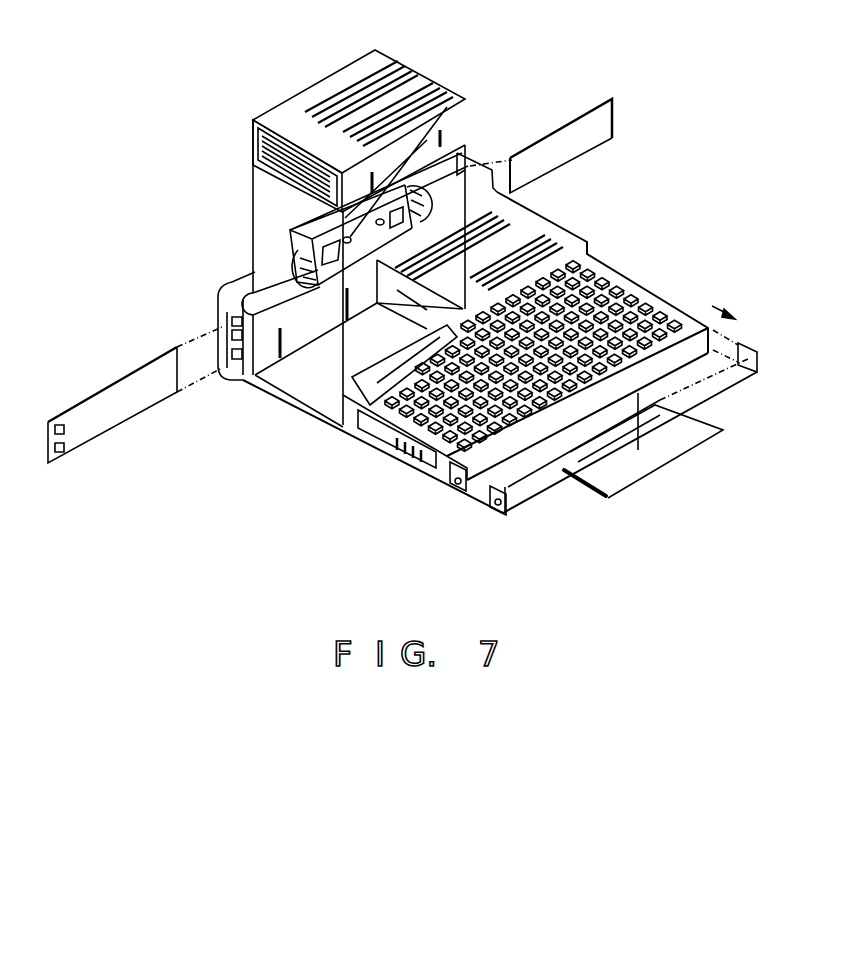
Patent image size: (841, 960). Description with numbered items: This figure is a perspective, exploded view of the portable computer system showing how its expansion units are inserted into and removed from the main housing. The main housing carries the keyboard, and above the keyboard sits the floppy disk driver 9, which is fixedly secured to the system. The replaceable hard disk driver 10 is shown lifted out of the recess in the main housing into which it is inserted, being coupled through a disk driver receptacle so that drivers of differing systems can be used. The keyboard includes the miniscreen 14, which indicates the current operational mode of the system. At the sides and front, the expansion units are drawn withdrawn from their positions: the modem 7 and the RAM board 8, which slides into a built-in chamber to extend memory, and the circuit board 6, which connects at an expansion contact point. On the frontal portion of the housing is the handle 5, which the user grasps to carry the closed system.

The handle 5 is at (750, 345).
The circuit board 6 is at (693, 437).
The modem 7 is at (102, 388).
The RAM board 8 is at (568, 140).
The floppy disk driver 9 is at (535, 218).
The hard disk driver 10 is at (403, 62).
The miniscreen 14 is at (376, 386).